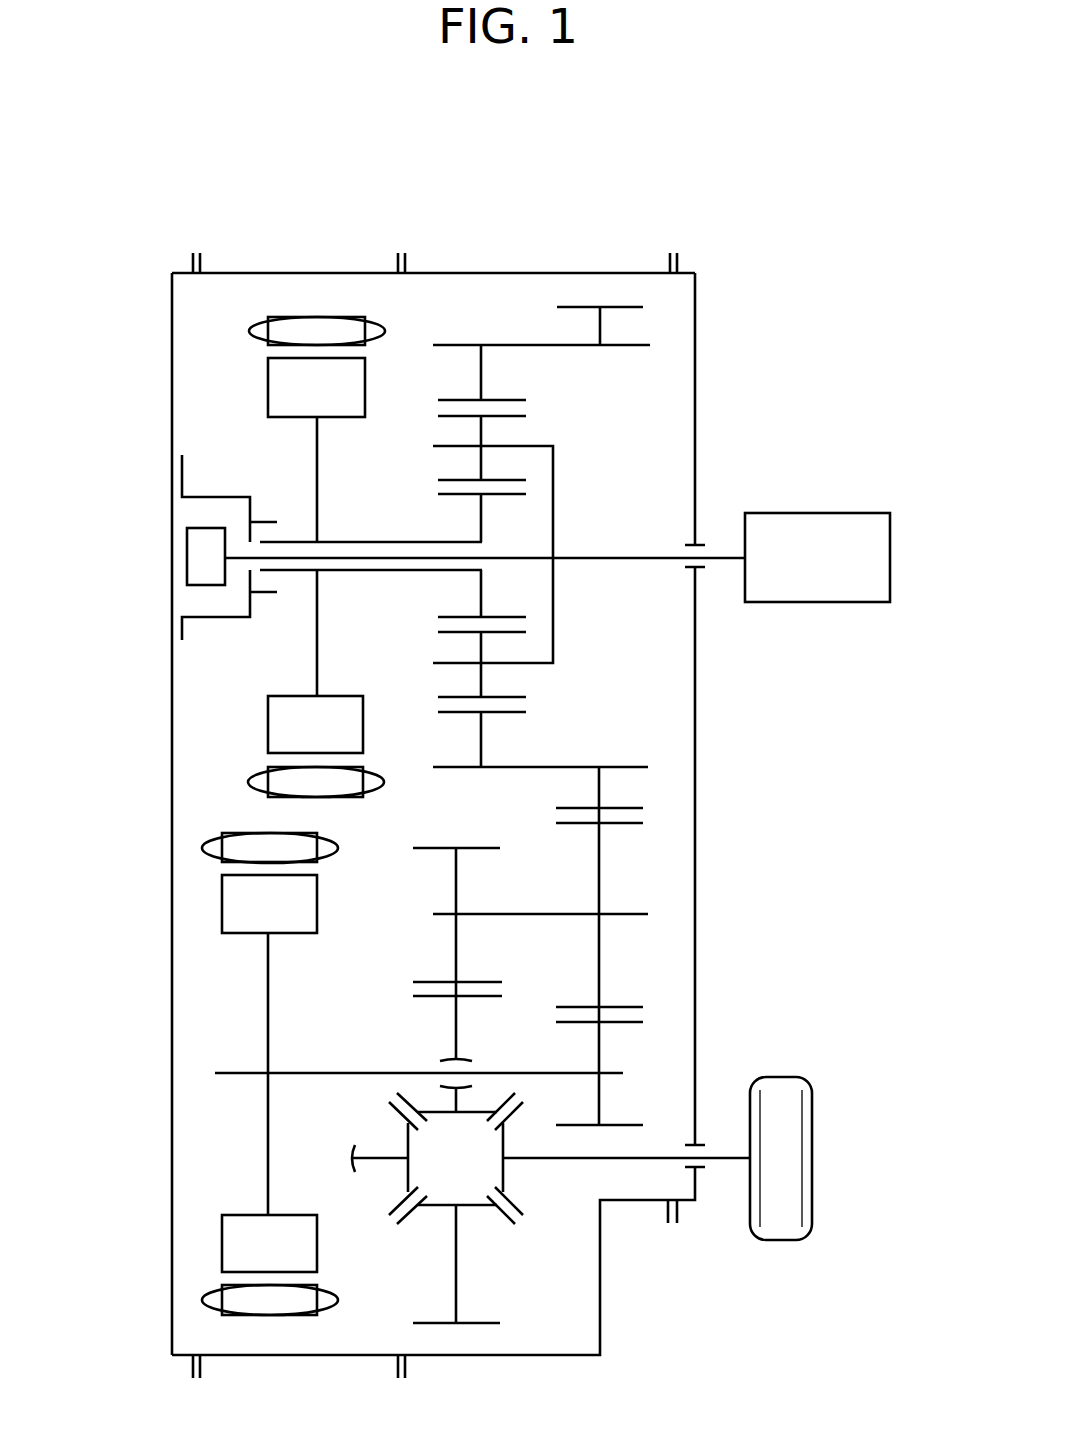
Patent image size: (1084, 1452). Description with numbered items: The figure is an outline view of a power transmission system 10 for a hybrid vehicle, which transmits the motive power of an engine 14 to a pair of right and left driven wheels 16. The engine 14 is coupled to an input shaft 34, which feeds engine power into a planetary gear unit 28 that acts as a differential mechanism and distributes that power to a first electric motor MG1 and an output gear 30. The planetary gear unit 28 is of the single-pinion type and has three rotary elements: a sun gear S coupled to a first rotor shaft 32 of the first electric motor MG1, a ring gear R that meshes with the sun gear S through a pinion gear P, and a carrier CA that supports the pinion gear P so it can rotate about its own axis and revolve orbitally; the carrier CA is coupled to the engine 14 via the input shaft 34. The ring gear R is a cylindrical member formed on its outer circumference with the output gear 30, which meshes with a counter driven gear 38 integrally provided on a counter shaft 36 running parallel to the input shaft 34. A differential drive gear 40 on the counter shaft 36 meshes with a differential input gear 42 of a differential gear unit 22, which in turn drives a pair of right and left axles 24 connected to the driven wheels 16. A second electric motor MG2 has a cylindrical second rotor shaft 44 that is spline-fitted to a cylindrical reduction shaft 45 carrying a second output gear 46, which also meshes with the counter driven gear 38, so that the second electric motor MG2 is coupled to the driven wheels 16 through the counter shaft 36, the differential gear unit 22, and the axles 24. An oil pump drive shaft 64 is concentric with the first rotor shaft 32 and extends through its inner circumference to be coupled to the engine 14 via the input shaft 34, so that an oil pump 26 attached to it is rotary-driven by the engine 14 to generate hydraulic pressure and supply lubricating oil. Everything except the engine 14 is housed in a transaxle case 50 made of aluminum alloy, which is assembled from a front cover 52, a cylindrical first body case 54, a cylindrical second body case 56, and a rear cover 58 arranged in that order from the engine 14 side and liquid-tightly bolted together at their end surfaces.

The power transmission system 10 is at (683, 165).
The engine 14 is at (870, 530).
The driven wheels 16 is at (785, 1095).
The differential gear unit 22 is at (537, 1234).
The axles 24 is at (725, 1162).
The oil pump 26 is at (205, 540).
The planetary gear unit 28 is at (521, 487).
The output gear 30 is at (613, 312).
The first rotor shaft 32 is at (307, 540).
The input shaft 34 is at (600, 556).
The counter shaft 36 is at (626, 912).
The counter driven gear 38 is at (626, 1006).
The differential drive gear 40 is at (437, 850).
The differential input gear 42 is at (478, 1322).
The second rotor shaft 44 is at (233, 1072).
The reduction shaft 45 is at (570, 1072).
The second output gear 46 is at (626, 1124).
The transaxle case 50 is at (148, 210).
The front cover 52 is at (697, 320).
The first body case 54 is at (607, 270).
The second body case 56 is at (298, 272).
The rear cover 58 is at (172, 330).
The oil pump drive shaft 64 is at (262, 570).
The first electric motor MG1 is at (232, 378).
The second electric motor MG2 is at (200, 1243).
The ring gear R is at (522, 368).
The pinion gear P is at (437, 475).
The sun gear S is at (446, 591).
The carrier CA is at (538, 665).